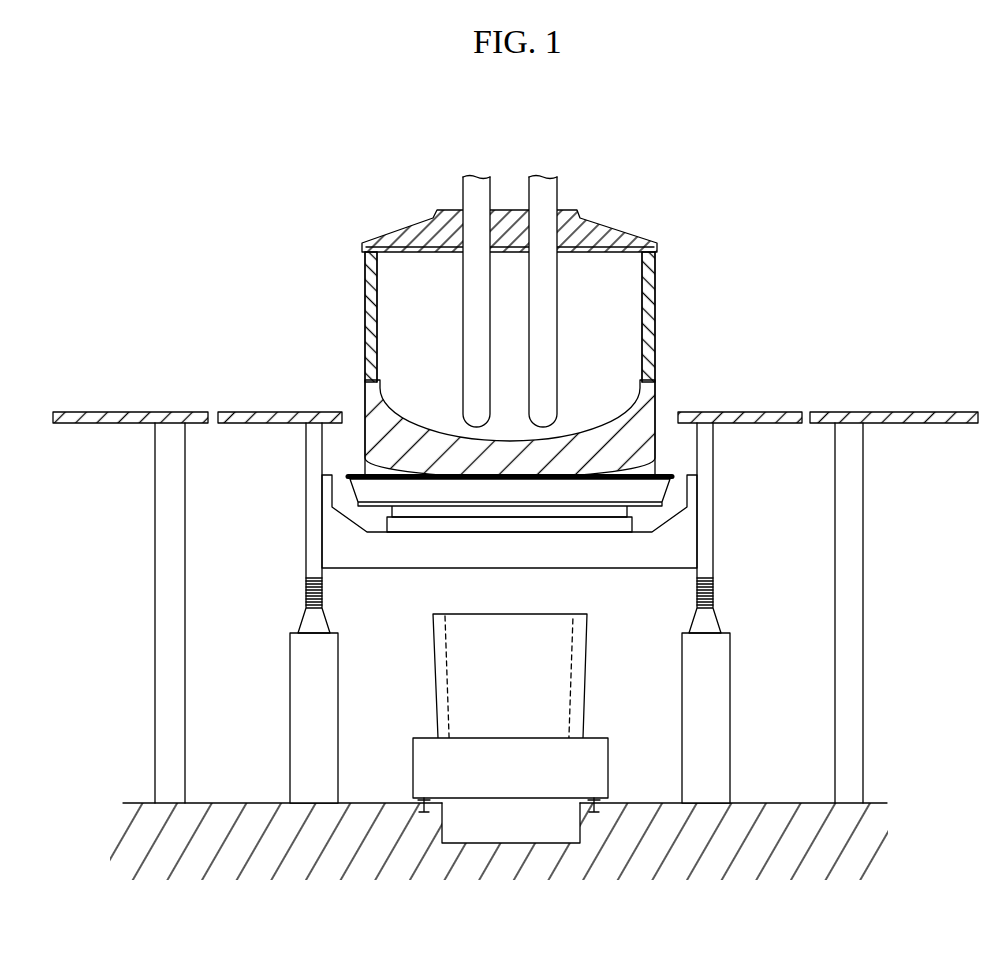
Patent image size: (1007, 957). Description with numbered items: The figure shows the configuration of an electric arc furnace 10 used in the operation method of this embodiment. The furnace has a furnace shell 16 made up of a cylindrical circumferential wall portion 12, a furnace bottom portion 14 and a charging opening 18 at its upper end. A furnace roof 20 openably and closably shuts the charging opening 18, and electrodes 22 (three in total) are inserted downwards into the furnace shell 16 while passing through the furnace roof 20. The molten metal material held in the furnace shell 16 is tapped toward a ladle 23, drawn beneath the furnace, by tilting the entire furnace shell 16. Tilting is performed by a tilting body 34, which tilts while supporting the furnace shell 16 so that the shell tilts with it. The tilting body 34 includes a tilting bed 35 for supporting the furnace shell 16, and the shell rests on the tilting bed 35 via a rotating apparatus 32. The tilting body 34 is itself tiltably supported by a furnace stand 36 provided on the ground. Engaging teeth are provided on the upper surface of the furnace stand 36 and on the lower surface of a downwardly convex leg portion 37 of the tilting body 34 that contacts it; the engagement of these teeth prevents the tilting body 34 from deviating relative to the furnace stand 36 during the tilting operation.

The electric arc furnace 10 is at (597, 296).
The circumferential wall portion 12 is at (650, 337).
The furnace bottom portion 14 is at (620, 438).
The furnace shell 16 is at (578, 308).
The charging opening 18 is at (378, 266).
The furnace roof 20 is at (625, 235).
The electrodes 22 is at (472, 198).
The ladle 23 is at (533, 668).
The rotating apparatus 32 is at (580, 550).
The tilting body 34 is at (279, 451).
The tilting bed 35 is at (428, 533).
The furnace stand 36 is at (303, 676).
The leg portion 37 is at (312, 518).